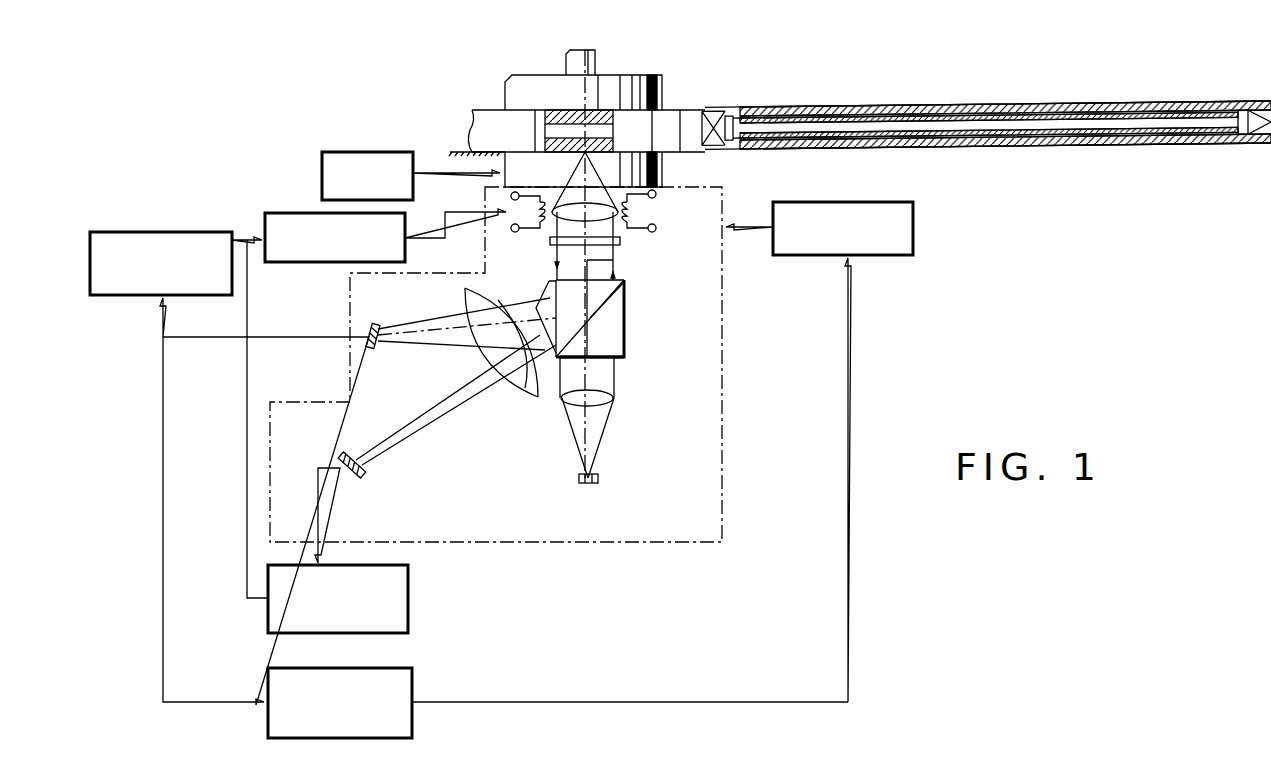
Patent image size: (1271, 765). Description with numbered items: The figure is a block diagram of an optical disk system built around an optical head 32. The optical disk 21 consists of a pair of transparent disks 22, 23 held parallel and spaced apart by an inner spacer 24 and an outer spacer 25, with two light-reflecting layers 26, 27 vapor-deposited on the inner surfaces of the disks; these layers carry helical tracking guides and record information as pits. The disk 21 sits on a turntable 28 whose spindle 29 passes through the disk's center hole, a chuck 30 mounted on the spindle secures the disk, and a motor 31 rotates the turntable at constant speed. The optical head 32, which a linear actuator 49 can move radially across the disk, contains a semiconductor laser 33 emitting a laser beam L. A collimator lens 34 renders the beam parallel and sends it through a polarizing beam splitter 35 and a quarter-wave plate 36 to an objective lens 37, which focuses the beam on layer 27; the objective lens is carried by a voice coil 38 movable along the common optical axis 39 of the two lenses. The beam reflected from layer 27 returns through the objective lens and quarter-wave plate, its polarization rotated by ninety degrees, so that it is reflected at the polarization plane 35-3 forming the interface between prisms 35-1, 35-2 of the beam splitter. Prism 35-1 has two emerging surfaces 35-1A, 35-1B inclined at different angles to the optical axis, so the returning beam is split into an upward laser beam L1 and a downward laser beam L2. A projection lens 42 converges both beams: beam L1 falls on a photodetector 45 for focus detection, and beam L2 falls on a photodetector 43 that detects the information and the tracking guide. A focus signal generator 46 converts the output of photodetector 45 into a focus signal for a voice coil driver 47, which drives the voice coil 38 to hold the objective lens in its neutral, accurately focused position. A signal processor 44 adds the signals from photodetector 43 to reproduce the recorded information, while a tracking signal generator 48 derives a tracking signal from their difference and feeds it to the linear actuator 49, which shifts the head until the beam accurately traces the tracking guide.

The optical disk 21 is at (868, 87).
The transparent disk 22 is at (1054, 104).
The transparent disk 23 is at (1006, 149).
The inner spacer 24 is at (736, 111).
The outer spacer 25 is at (1243, 108).
The light-reflecting layer 26 is at (1102, 110).
The light-reflecting layer 27 is at (1095, 143).
The turntable 28 is at (458, 148).
The spindle 29 is at (600, 58).
The chuck 30 is at (660, 90).
The motor 31 is at (324, 180).
The optical head 32 is at (724, 340).
The semiconductor laser 33 is at (598, 478).
The collimator lens 34 is at (612, 402).
The polarizing beam splitter 35 is at (626, 340).
The prism 35-1 is at (532, 390).
The laser beam emerging surface 35-1A is at (519, 376).
The laser beam emerging surface 35-1B is at (538, 306).
The prism 35-2 is at (626, 356).
The polarization plane 35-3 is at (612, 296).
The quarter-wave plate 36 is at (552, 245).
The objective lens 37 is at (620, 245).
The voice coil 38 is at (656, 230).
The common optical axis 39 is at (613, 264).
The projection lens 42 is at (465, 290).
The photodetector 43 is at (370, 322).
The signal processor 44 is at (142, 232).
The photodetector 45 is at (362, 476).
The focus signal generator 46 is at (410, 596).
The voice coil driver 47 is at (308, 262).
The tracking signal generator 48 is at (414, 676).
The linear actuator 49 is at (913, 224).
The laser beam L is at (614, 382).
The laser beam L1 is at (436, 340).
The laser beam L2 is at (448, 408).